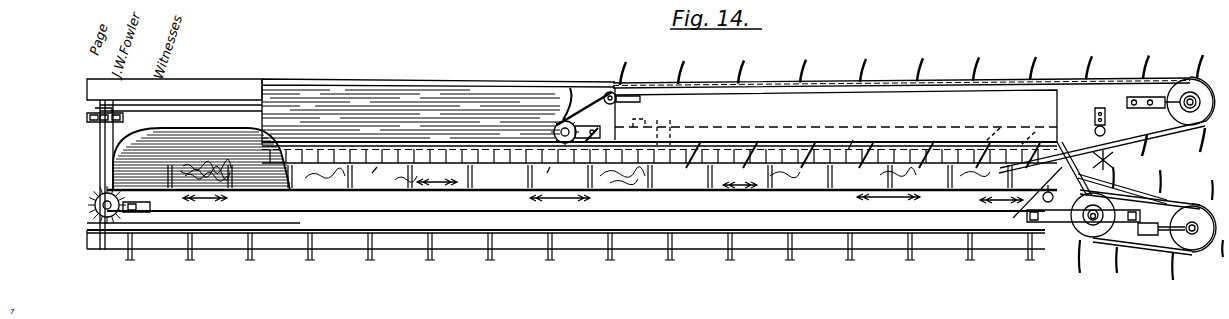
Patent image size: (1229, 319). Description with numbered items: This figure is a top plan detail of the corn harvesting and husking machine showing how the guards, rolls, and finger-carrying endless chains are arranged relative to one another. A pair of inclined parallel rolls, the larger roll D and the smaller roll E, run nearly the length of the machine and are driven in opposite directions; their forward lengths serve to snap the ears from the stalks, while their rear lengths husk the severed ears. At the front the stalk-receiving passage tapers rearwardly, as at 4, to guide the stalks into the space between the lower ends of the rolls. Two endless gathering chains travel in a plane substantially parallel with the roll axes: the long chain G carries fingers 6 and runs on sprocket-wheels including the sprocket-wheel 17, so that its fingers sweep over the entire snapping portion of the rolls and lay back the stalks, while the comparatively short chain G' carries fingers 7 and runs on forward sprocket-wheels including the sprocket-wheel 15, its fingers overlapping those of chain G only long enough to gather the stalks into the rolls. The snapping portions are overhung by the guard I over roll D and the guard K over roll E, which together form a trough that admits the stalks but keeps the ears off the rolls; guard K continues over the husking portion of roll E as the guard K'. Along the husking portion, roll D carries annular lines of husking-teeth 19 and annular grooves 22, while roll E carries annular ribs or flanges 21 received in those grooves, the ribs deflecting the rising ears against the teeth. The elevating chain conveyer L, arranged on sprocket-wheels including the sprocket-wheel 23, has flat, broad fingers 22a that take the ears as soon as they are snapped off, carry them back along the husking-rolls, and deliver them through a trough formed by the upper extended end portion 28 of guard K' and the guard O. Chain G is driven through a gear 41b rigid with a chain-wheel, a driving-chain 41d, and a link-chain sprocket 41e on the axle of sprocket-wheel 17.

The tapering gap of the stalk-receiving passage 4 is at (1181, 166).
The fingers 6 is at (945, 138).
The fingers 7 is at (1177, 267).
The sprocket-wheel 15 is at (1097, 230).
The sprocket-wheel 17 is at (560, 124).
The husking-teeth 19 is at (410, 157).
The annular ribs or flanges 21 is at (547, 173).
The annular grooves 22 is at (458, 157).
The fingers of the chain conveyer 22a is at (1080, 270).
The sprocket-wheel 23 is at (94, 203).
The upper extended end portion of guard K' 28 is at (258, 178).
The gear 41b is at (100, 120).
The driving-chain 41d is at (185, 110).
The link-chain wheel or sprocket 41e is at (582, 108).
The roll D is at (1057, 141).
The roll E is at (1031, 200).
The endless gathering chain G is at (914, 114).
The endless gathering chain G' is at (1121, 232).
The guard I is at (850, 139).
The guard K is at (572, 207).
The guard K' is at (353, 195).
The endless chain conveyer L is at (577, 237).
The guard O is at (208, 130).